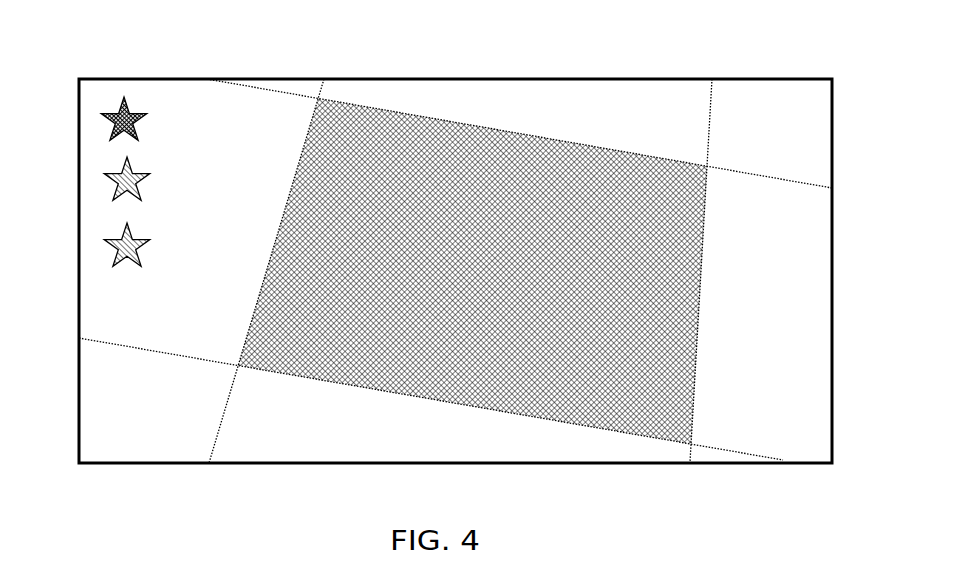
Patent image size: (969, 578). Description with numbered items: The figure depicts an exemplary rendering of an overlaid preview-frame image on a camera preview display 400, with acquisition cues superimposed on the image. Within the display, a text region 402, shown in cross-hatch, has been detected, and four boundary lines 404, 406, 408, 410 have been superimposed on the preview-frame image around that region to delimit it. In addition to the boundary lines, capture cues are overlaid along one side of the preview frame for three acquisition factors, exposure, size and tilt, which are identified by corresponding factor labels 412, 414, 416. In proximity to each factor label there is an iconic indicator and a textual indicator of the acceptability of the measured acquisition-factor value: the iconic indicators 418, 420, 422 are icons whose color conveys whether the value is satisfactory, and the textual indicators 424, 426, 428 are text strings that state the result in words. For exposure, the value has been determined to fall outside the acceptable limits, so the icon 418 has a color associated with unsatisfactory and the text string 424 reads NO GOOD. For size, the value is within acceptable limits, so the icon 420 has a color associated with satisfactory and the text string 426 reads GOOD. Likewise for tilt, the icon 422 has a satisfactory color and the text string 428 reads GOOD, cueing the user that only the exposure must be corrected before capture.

The camera preview display 400 is at (815, 75).
The text region 402 is at (397, 130).
The boundary line 404 is at (561, 139).
The boundary line 406 is at (129, 348).
The boundary line 408 is at (223, 428).
The boundary line 410 is at (703, 312).
The factor label 412 is at (222, 81).
The factor label 414 is at (218, 121).
The factor label 416 is at (120, 249).
The iconic indicator 418 is at (124, 96).
The iconic indicator 420 is at (106, 177).
The iconic indicator 422 is at (106, 243).
The textual indicator 424 is at (266, 126).
The textual indicator 426 is at (224, 184).
The textual indicator 428 is at (166, 266).